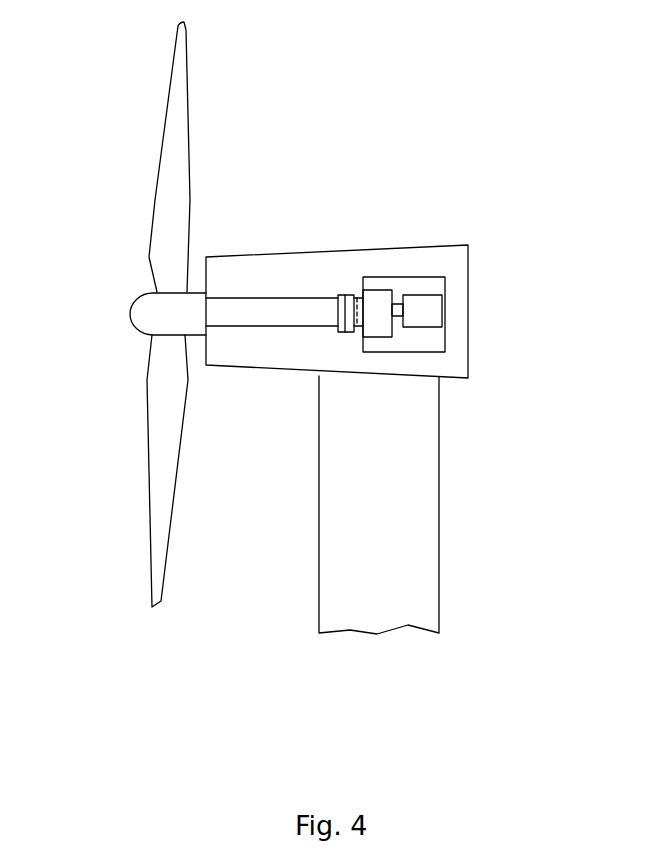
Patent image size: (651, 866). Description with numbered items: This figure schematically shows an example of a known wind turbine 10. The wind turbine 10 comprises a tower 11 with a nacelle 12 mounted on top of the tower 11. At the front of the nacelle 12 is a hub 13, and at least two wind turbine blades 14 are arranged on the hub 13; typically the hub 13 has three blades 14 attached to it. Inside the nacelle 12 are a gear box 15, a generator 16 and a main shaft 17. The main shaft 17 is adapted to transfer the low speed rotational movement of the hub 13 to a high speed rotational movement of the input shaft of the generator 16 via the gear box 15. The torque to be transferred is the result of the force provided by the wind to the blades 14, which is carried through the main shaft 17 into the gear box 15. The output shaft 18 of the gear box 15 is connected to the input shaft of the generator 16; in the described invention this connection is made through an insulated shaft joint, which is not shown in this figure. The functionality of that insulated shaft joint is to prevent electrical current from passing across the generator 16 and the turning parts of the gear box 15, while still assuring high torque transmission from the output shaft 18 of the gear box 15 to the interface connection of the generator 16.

The wind turbine 10 is at (427, 127).
The tower 11 is at (397, 462).
The nacelle 12 is at (248, 263).
The hub 13 is at (143, 313).
The wind turbine blades 14 is at (173, 153).
The gear box 15 is at (375, 299).
The generator 16 is at (430, 313).
The main shaft 17 is at (268, 305).
The output shaft 18 is at (397, 307).